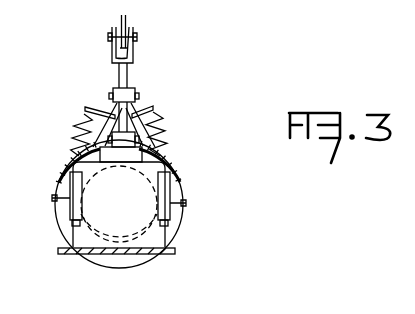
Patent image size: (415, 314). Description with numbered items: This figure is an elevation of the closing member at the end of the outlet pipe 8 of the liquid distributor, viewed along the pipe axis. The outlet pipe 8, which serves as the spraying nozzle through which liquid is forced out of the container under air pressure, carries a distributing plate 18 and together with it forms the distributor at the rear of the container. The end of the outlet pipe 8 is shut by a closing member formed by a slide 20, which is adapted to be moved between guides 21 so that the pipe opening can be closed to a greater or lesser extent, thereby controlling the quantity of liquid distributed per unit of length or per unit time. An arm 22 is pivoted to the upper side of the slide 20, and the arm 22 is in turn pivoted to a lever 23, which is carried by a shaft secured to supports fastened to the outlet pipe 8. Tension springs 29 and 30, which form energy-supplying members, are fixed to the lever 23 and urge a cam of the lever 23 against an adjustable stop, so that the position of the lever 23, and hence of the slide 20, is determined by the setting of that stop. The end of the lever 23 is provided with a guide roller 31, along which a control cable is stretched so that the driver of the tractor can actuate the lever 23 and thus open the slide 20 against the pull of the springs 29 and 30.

The outlet pipe 8 is at (142, 258).
The distributing plate 18 is at (78, 254).
The slide 20 is at (166, 240).
The guides 21 is at (72, 212).
The arm 22 is at (113, 93).
The lever 23 is at (128, 72).
The tension spring 29 is at (80, 130).
The tension spring 30 is at (163, 130).
The guide roller 31 is at (120, 27).